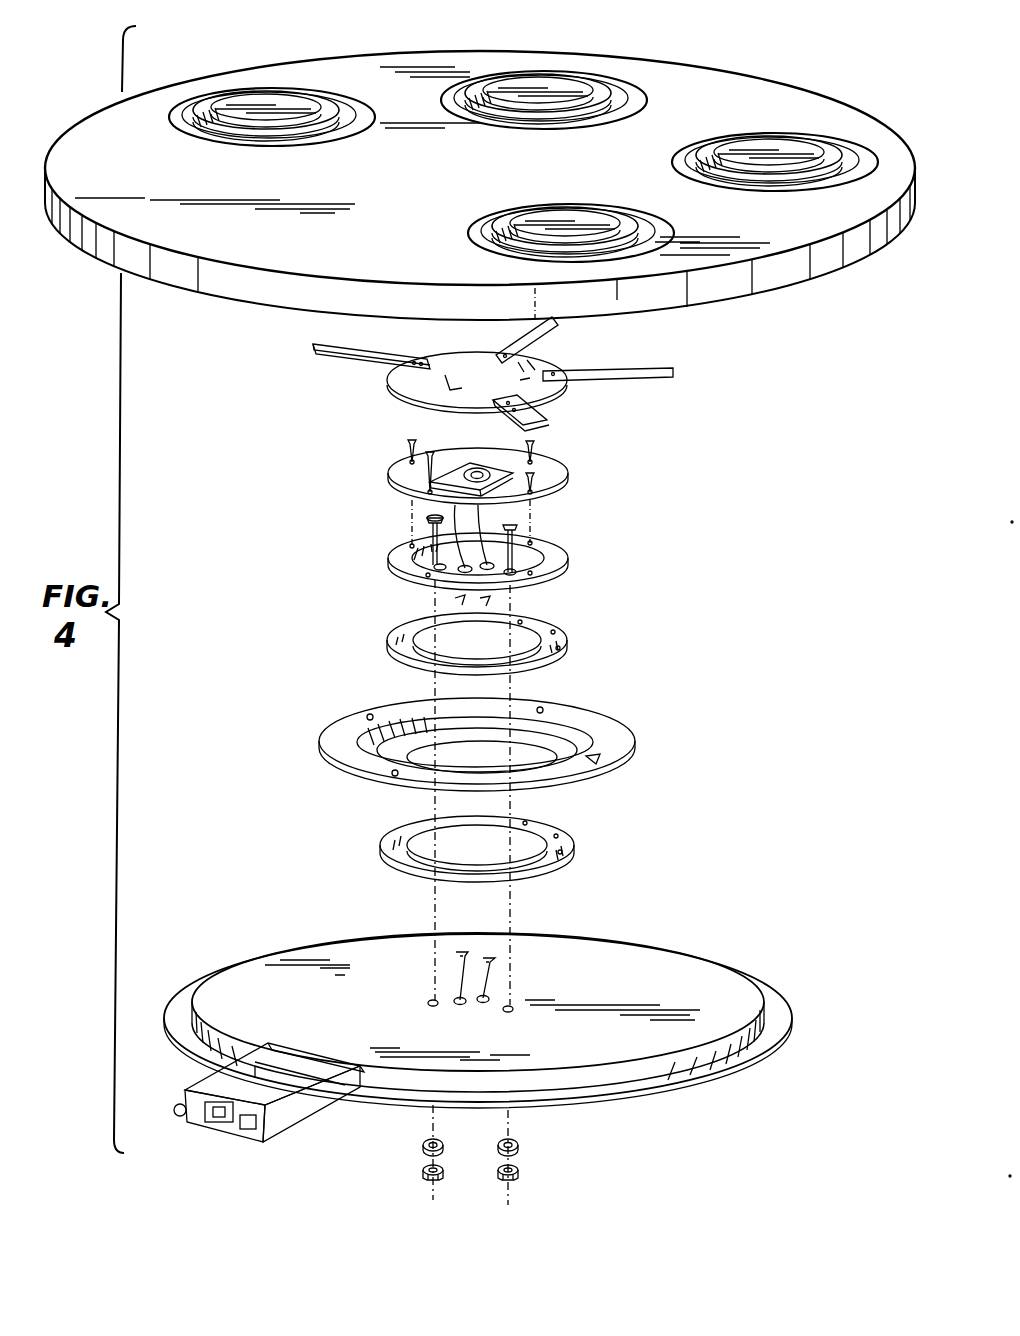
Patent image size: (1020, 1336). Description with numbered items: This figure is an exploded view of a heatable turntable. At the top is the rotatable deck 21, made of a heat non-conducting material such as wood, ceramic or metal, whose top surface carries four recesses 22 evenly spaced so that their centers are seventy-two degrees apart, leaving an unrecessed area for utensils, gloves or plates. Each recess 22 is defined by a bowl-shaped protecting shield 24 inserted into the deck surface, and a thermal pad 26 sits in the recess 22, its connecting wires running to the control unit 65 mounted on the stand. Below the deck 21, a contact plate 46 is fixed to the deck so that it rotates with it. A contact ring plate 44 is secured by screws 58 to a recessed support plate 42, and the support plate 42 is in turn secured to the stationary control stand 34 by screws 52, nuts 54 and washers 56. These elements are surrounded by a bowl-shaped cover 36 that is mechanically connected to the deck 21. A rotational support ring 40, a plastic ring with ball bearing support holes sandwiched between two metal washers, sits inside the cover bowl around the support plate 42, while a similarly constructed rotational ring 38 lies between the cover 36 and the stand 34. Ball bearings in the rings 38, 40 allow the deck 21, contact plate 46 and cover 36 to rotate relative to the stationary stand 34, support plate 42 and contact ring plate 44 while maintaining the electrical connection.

The rotatable deck 21 is at (412, 208).
The recess 22 is at (608, 108).
The bowl-shaped protecting shield 24 is at (663, 229).
The thermal pad 26 is at (232, 102).
The control stand 34 is at (398, 994).
The bowl-shaped cover 36 is at (620, 740).
The rotational ring 38 is at (388, 840).
The rotational support ring 40 is at (568, 638).
The recessed support plate 42 is at (570, 562).
The contact ring plate 44 is at (570, 482).
The contact plate 46 is at (548, 403).
The screws 52 is at (514, 523).
The nuts 54 is at (521, 1177).
The washers 56 is at (521, 1146).
The screws 58 is at (405, 437).
The control unit 65 is at (272, 1087).